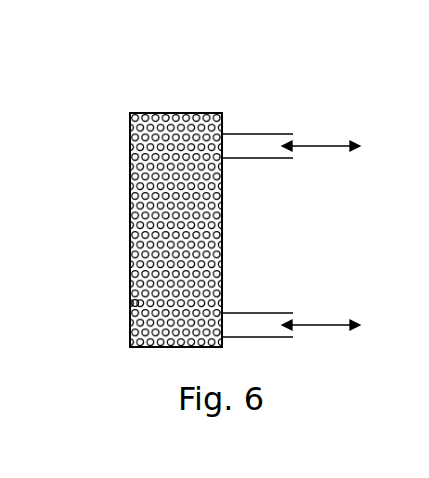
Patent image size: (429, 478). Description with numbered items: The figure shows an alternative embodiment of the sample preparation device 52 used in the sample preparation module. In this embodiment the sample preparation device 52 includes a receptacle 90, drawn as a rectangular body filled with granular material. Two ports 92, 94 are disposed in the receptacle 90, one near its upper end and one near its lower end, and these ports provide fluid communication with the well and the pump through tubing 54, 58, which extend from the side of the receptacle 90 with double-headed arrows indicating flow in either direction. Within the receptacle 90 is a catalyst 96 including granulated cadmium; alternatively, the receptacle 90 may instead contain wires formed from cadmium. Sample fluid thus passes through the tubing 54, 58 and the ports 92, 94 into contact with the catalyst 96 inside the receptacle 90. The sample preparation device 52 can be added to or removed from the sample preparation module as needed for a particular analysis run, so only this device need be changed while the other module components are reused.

The sample preparation device 52 is at (295, 60).
The tubing 54 is at (273, 134).
The tubing 58 is at (270, 338).
The receptacle 90 is at (130, 243).
The port 92 is at (235, 145).
The port 94 is at (227, 322).
The catalyst 96 is at (130, 303).